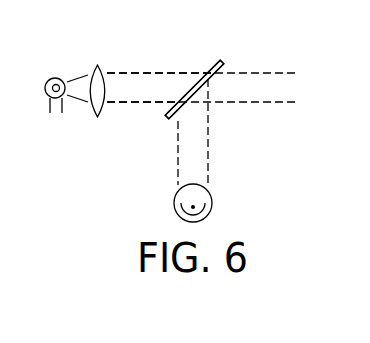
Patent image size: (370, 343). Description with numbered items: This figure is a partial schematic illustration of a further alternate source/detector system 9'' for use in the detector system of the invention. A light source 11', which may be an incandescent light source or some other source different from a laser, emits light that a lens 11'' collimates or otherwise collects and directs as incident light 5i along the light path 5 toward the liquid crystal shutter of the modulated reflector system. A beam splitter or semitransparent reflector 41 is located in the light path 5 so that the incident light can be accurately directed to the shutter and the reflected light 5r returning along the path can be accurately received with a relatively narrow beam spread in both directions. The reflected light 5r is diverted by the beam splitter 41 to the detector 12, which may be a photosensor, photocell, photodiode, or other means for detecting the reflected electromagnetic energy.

The light source 11' is at (66, 63).
The lens 11'' is at (103, 65).
The incident light 5i is at (170, 72).
The light path 5 is at (301, 65).
The beam splitter 41 is at (167, 118).
The alternate source/detector system 9'' is at (203, 59).
The reflected light 5r is at (209, 135).
The detector 12 is at (212, 192).